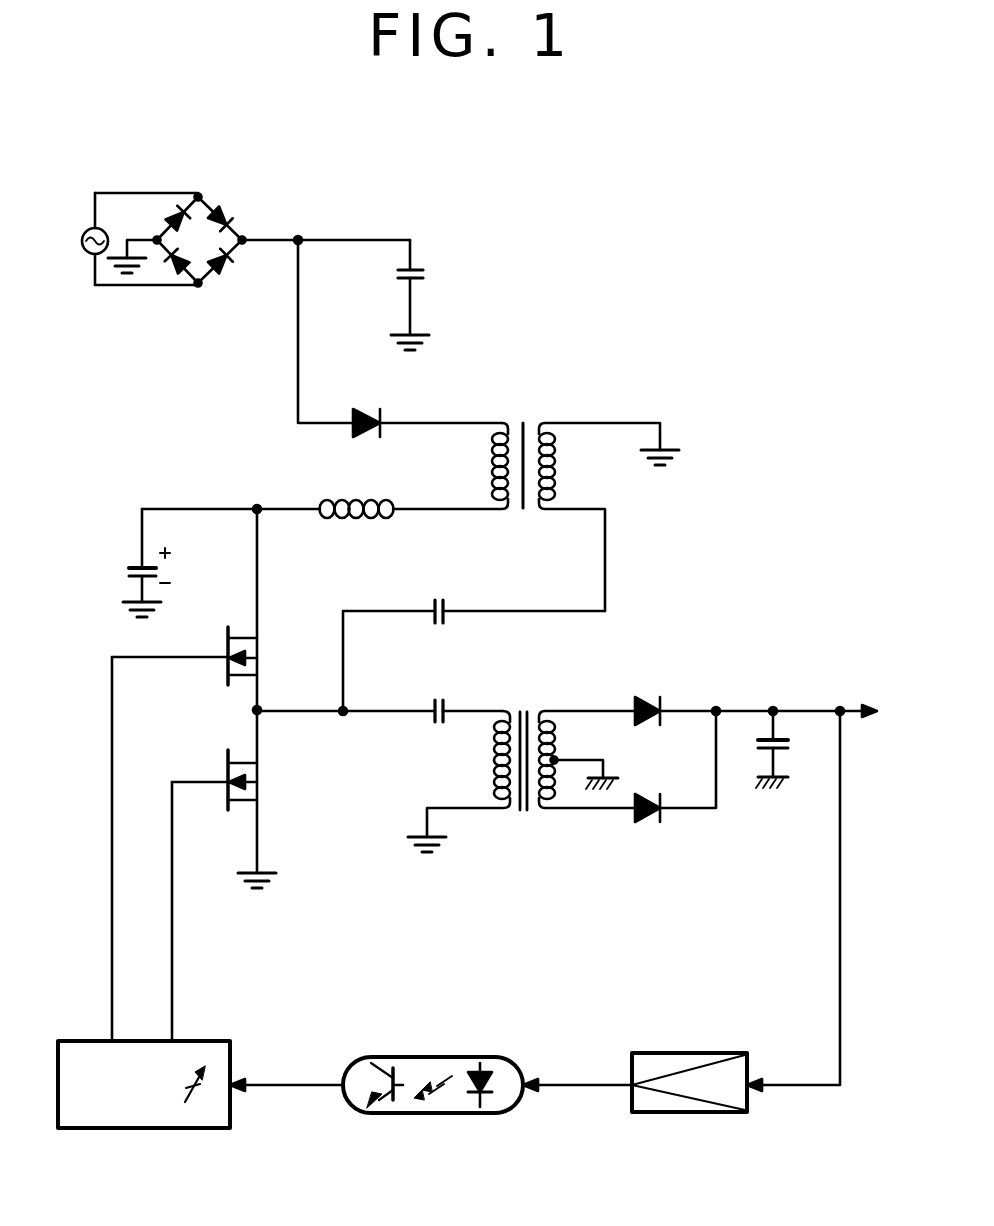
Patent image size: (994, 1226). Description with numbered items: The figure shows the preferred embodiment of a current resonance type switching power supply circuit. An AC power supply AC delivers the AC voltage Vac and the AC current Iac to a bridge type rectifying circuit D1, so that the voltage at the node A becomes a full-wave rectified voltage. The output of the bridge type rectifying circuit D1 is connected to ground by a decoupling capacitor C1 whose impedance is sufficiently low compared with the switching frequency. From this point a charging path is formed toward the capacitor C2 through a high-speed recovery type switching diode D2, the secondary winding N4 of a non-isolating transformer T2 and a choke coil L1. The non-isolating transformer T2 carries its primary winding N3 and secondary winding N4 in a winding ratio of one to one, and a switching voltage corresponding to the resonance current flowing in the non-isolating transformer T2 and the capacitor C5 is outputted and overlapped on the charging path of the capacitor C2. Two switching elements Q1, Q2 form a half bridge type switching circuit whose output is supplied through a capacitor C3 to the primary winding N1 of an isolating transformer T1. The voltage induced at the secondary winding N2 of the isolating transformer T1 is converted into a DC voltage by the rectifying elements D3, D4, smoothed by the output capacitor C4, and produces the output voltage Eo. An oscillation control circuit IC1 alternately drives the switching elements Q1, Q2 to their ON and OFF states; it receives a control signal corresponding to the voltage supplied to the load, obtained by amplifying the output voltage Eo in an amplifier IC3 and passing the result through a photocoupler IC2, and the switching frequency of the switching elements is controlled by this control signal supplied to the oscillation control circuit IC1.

The AC power supply AC is at (77, 244).
The AC voltage Vac is at (146, 177).
The AC current Iac is at (146, 305).
The bridge type rectifying circuit D1 is at (177, 240).
The rectified output node A is at (326, 220).
The decoupling capacitor C1 is at (428, 295).
The high-speed recovery type switching diode D2 is at (427, 407).
The non-isolating transformer T2 is at (536, 499).
The secondary winding N4 is at (450, 466).
The primary winding N3 is at (609, 517).
The choke coil L1 is at (268, 528).
The capacitor C2 is at (128, 563).
The capacitor C5 is at (474, 639).
The switching element Q1 is at (209, 609).
The switching element Q2 is at (239, 799).
The capacitor C3 is at (379, 695).
The isolating transformer T1 is at (521, 762).
The primary winding N1 is at (459, 781).
The secondary winding N2 is at (587, 759).
The rectifying element D3 is at (736, 695).
The rectifying element D4 is at (675, 784).
The output capacitor C4 is at (792, 747).
The output voltage Eo is at (875, 712).
The oscillation control circuit IC1 is at (140, 1128).
The photocoupler IC2 is at (437, 1113).
The amplifier IC3 is at (680, 1113).